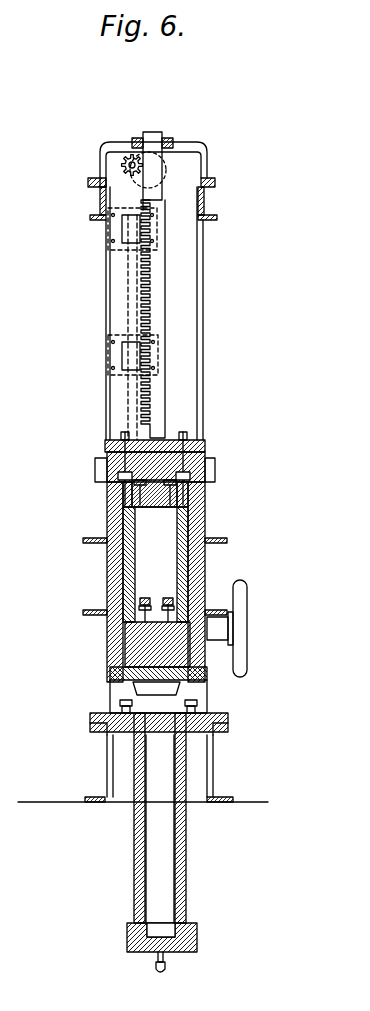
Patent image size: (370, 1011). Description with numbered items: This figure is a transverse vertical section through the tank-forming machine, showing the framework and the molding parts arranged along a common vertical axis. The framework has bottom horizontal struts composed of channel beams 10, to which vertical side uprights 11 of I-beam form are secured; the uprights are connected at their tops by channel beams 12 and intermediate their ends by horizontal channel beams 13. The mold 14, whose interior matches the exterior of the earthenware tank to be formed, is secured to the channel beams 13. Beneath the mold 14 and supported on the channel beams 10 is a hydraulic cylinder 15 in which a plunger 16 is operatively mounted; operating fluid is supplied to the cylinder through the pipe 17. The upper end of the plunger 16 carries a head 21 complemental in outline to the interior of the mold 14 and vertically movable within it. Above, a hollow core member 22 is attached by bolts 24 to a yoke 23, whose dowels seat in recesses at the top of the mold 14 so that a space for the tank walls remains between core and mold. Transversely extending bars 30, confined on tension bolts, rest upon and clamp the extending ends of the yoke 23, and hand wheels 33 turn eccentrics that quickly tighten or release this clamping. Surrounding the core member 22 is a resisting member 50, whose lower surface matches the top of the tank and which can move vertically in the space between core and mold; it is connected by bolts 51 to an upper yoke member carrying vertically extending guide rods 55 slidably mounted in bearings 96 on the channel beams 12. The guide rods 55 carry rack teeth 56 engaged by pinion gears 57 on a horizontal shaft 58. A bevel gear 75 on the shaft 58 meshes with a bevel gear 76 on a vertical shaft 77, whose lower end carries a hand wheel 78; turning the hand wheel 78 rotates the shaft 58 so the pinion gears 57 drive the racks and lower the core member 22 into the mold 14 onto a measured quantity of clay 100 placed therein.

The channel beams 10 is at (108, 770).
The vertical side uprights 11 is at (185, 330).
The channel beams 12 is at (205, 190).
The channel beams 13 is at (213, 552).
The mold 14 is at (112, 633).
The hydraulic cylinder 15 is at (187, 823).
The plunger 16 is at (155, 867).
The pipe 17 is at (158, 958).
The head 21 is at (130, 682).
The core member 22 is at (205, 527).
The yoke 23 is at (115, 508).
The bolts 24 is at (113, 510).
The transversely extending bars 30 is at (95, 466).
The hand wheels 33 is at (241, 613).
The resisting member 50 is at (128, 612).
The bolts 51 is at (107, 491).
The guide rods 55 is at (142, 325).
The rack teeth 56 is at (140, 268).
The pinion gears 57 is at (141, 135).
The horizontal shaft 58 is at (128, 167).
The bevel gear 75 is at (127, 147).
The bevel gear 76 is at (105, 225).
The vertical shaft 77 is at (130, 302).
The hand wheel 78 is at (105, 444).
The bearings 96 is at (138, 142).
The clay 100 is at (147, 651).